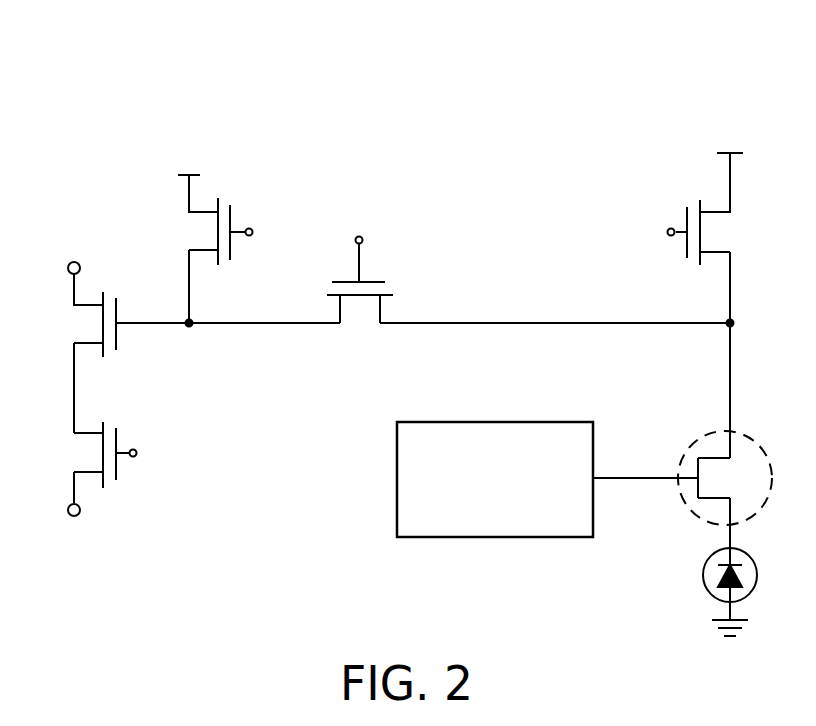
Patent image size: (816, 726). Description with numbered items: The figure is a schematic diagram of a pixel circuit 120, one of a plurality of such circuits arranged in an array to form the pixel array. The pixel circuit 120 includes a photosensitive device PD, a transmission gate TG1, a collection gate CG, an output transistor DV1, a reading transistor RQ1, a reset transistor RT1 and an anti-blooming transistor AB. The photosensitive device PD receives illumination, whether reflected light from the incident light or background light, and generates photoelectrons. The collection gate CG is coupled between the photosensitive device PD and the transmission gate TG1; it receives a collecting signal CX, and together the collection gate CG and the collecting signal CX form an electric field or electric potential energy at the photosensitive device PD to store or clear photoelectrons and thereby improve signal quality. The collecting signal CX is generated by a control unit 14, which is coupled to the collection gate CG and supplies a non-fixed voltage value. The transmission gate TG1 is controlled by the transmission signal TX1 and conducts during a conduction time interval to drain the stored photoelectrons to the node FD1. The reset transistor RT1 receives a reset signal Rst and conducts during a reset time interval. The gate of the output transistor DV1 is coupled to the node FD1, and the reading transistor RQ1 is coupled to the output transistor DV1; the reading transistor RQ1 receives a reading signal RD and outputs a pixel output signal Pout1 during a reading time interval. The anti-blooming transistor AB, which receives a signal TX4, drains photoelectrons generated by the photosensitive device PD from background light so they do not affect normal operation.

The pixel circuit 120 is at (166, 104).
The control unit 14 is at (495, 422).
The reset transistor RT1 is at (183, 220).
The reset signal Rst is at (262, 234).
The node FD1 is at (188, 308).
The output transistor DV1 is at (69, 347).
The reading transistor RQ1 is at (70, 462).
The reading signal RD is at (150, 457).
The pixel output signal Pout1 is at (74, 529).
The transmission signal TX1 is at (357, 240).
The transmission gate TG1 is at (360, 324).
The signal TX4 is at (648, 234).
The anti-blooming transistor AB is at (723, 305).
The collecting signal CX is at (645, 459).
The collection gate CG is at (725, 489).
The photosensitive device PD is at (757, 583).